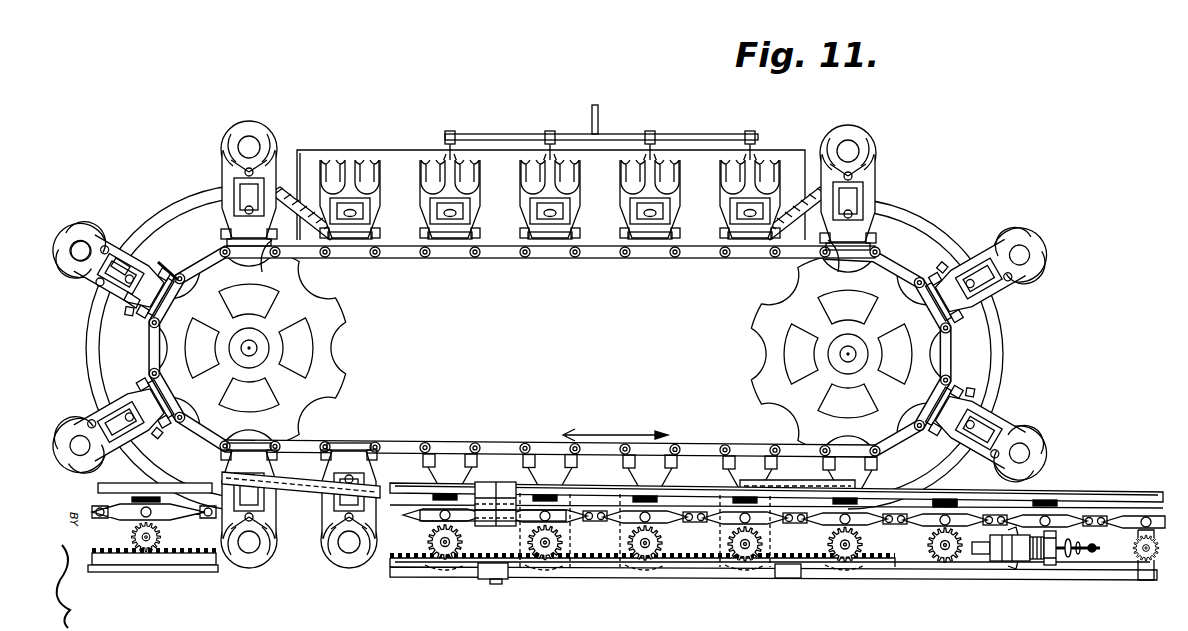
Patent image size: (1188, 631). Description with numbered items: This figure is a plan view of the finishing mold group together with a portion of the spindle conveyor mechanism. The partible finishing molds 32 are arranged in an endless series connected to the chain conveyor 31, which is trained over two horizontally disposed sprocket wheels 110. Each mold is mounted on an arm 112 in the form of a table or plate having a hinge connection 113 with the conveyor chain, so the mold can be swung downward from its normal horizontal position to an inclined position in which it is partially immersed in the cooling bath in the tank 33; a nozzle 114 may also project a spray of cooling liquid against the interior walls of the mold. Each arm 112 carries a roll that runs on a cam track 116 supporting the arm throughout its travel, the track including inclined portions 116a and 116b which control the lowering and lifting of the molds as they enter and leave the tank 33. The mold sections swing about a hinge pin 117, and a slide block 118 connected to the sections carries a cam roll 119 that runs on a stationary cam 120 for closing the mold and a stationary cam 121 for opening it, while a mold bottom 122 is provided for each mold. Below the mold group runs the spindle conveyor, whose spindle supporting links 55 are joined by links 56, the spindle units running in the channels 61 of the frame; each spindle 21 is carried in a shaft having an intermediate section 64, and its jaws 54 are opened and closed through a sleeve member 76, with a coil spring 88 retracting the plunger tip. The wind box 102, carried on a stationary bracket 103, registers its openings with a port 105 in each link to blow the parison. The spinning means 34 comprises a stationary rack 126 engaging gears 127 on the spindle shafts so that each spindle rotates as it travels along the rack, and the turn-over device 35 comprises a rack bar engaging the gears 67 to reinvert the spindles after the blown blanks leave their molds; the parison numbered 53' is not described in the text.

The spindle 21 is at (130, 539).
The finishing mold conveyor 31 is at (504, 259).
The finishing mold 32 is at (736, 186).
The cooling tank 33 is at (806, 150).
The spinning means 34 is at (554, 580).
The turn-over device 35 is at (1080, 500).
The coupling sleeve 53' is at (970, 573).
The jaws 54 is at (1006, 562).
The spindle supporting link 55 is at (925, 528).
The link 56 is at (897, 528).
The channel 61 is at (1052, 494).
The intermediate section 64 is at (1050, 566).
The gears 67 is at (946, 501).
The sleeve member 76 is at (1036, 562).
The coil spring 88 is at (1085, 548).
The wind box 102 is at (424, 520).
The stationary bracket 103 is at (514, 482).
The port 105 is at (676, 528).
The sprocket wheel 110 is at (340, 354).
The arm 112 is at (128, 240).
The hinge connection 113 is at (162, 262).
The nozzle 114 is at (773, 131).
The cam track 116 is at (1004, 351).
The inclined portion 116a is at (790, 252).
The inclined portion 116b is at (292, 250).
The hinge pin 117 is at (98, 285).
The slide block 118 is at (128, 262).
The cam roll 119 is at (133, 304).
The stationary cam 120 is at (284, 470).
The stationary cam 121 is at (783, 480).
The mold bottom 122 is at (72, 250).
The stationary rack 126 is at (586, 571).
The gears 127 is at (620, 550).